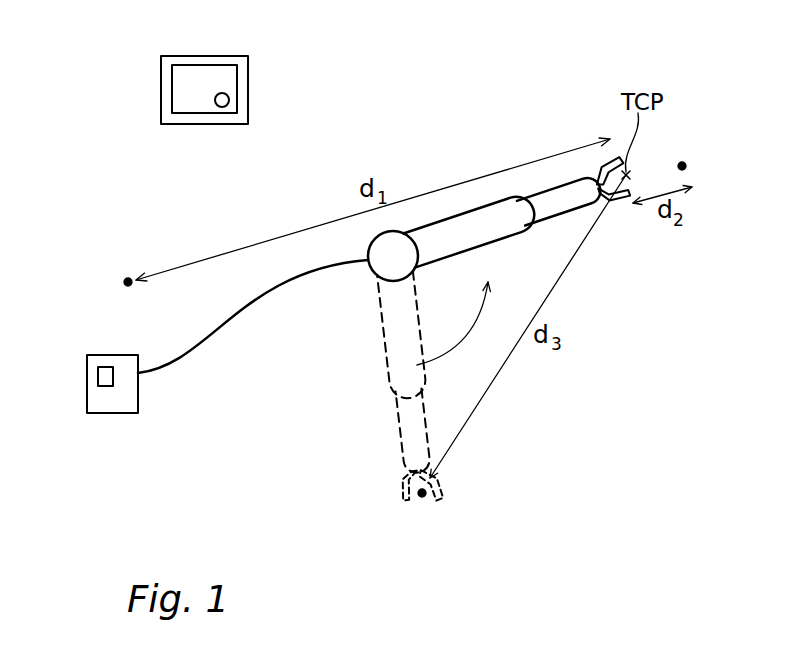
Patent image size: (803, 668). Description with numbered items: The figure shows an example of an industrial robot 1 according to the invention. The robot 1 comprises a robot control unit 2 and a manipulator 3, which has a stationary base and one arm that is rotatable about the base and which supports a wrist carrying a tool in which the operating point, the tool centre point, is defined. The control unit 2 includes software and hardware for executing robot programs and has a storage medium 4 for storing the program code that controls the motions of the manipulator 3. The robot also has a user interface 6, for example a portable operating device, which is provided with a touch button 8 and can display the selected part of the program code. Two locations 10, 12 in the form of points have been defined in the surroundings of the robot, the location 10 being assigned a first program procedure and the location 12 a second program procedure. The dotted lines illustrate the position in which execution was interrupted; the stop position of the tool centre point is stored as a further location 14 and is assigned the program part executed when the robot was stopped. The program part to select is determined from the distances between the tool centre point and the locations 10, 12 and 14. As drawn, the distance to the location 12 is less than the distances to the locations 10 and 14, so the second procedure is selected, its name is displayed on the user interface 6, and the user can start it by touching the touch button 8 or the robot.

The industrial robot 1 is at (475, 330).
The robot control unit 2 is at (112, 406).
The manipulator 3 is at (490, 228).
The storage medium 4 is at (98, 375).
The user interface 6 is at (205, 73).
The touch button 8 is at (229, 99).
The location 10 is at (127, 277).
The location 12 is at (682, 161).
The location 14 is at (422, 497).